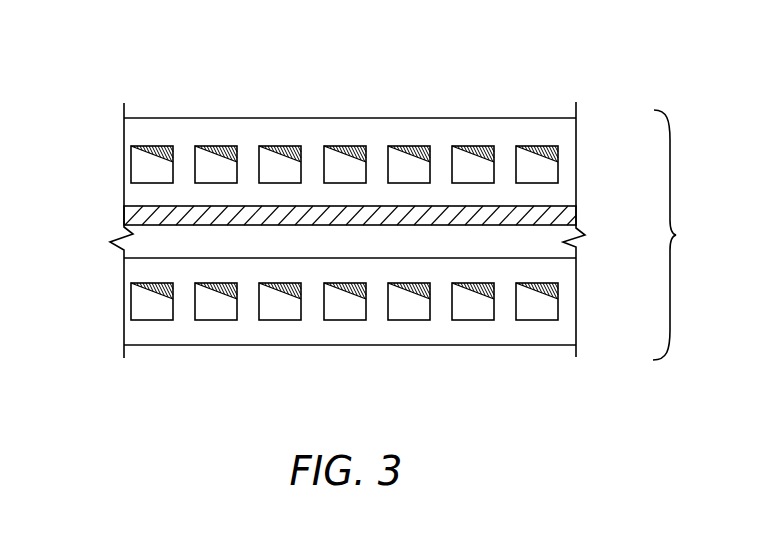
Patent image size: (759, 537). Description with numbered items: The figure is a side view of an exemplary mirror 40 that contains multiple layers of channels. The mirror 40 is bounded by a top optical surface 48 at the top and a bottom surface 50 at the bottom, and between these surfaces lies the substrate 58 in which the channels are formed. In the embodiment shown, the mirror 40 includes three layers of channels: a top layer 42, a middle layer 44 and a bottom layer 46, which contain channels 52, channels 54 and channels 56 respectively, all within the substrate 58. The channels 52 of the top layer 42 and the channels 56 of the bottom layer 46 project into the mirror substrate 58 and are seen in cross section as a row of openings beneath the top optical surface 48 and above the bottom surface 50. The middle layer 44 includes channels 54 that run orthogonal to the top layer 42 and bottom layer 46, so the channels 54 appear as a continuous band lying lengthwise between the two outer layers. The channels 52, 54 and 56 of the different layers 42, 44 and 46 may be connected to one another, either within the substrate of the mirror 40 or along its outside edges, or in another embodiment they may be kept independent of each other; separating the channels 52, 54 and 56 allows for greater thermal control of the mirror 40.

The mirror 40 is at (102, 65).
The top layer 42 is at (124, 137).
The middle layer 44 is at (123, 227).
The bottom layer 46 is at (124, 298).
The top optical surface 48 is at (445, 118).
The bottom surface 50 is at (423, 346).
The channels 52 is at (537, 170).
The channels 54 is at (567, 215).
The channels 56 is at (558, 307).
The substrate 58 is at (678, 235).